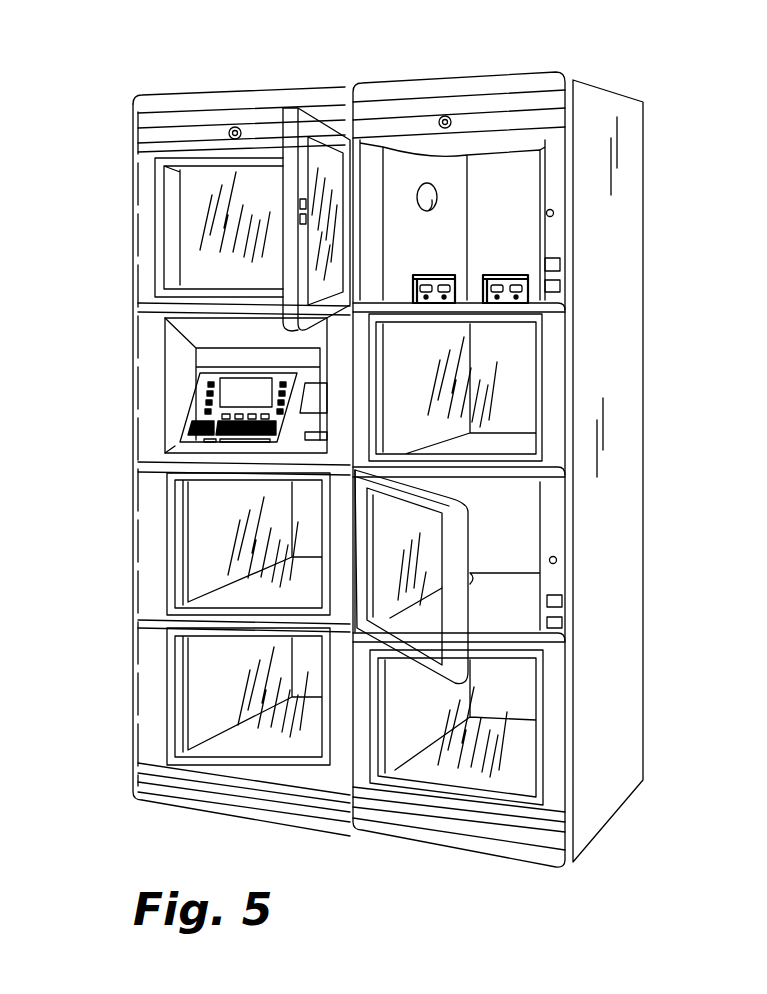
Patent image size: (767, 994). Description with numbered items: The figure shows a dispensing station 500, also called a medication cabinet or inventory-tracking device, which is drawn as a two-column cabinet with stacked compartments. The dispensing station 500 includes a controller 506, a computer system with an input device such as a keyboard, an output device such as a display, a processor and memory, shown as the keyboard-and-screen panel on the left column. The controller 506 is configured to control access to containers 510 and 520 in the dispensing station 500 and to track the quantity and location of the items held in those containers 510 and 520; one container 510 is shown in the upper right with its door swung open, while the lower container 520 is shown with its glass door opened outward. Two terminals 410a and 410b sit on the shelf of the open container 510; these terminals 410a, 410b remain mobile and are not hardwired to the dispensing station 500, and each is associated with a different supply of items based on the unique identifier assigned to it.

The dispensing station 500 is at (204, 70).
The controller 506 is at (98, 390).
The container 510 is at (497, 185).
The container 520 is at (512, 529).
The terminal 410a is at (440, 274).
The terminal 410b is at (505, 274).